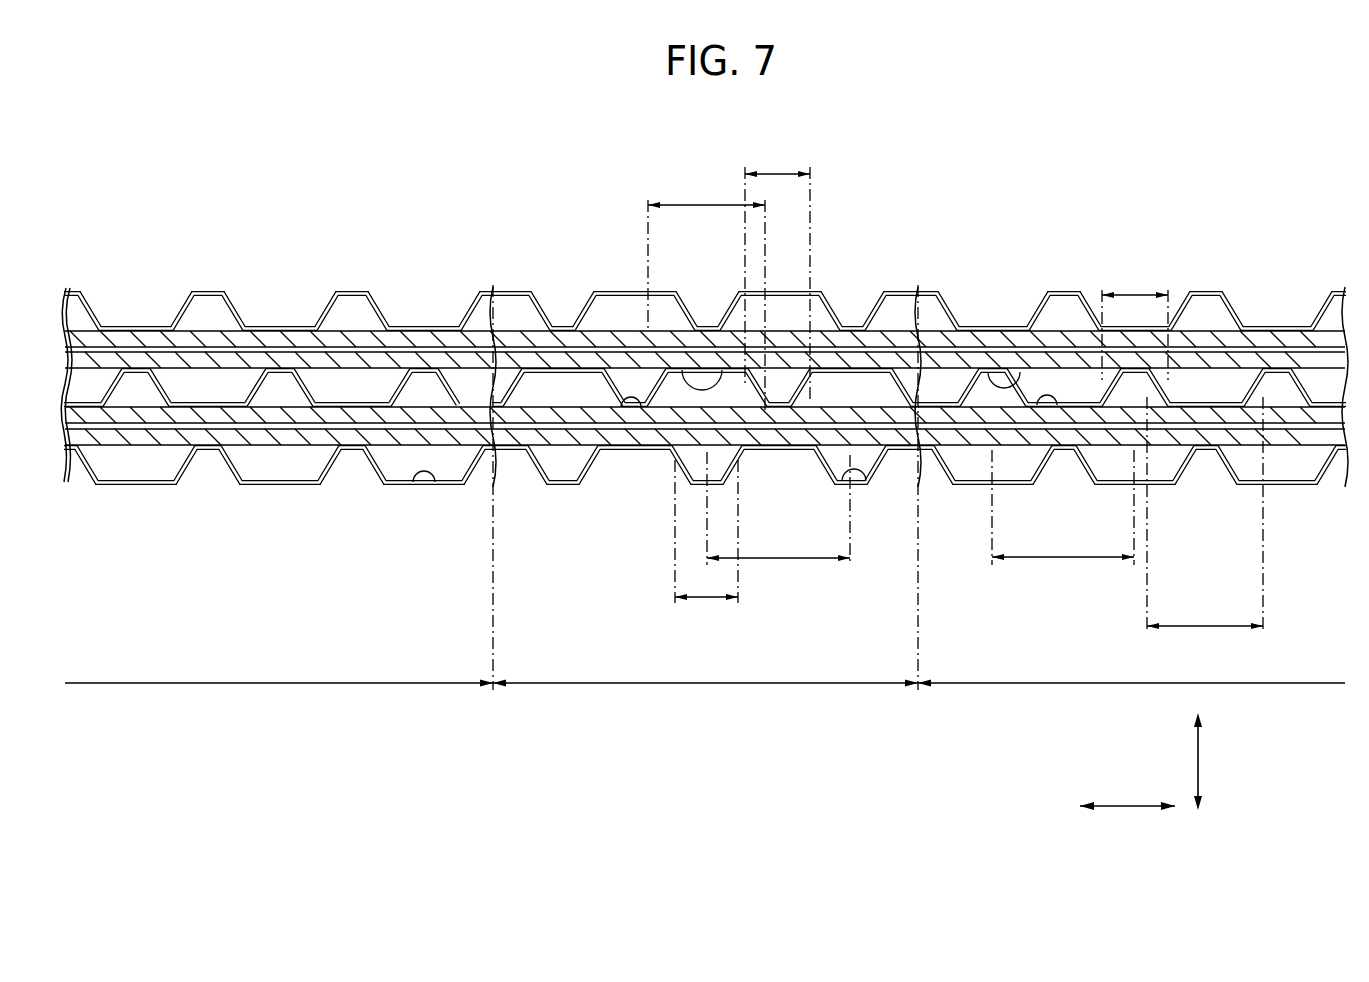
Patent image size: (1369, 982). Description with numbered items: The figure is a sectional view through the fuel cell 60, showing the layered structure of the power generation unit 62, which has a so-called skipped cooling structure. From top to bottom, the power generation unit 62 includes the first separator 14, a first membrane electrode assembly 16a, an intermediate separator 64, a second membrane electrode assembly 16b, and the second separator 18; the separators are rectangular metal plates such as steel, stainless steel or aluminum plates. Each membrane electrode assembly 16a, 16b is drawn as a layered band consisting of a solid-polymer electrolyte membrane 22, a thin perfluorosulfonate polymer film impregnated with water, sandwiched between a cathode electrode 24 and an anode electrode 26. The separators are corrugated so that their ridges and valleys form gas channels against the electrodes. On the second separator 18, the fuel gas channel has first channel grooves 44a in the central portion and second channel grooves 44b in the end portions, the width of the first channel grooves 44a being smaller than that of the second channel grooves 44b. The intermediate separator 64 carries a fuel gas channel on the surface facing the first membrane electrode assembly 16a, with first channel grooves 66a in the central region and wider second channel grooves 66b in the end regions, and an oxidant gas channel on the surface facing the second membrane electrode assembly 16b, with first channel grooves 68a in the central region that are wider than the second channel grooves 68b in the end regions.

The fuel cell 60 is at (737, 122).
The power generation unit 62 is at (341, 600).
The first separator 14 is at (705, 449).
The first membrane electrode assembly 16a is at (705, 467).
The intermediate separator 64 is at (705, 487).
The second membrane electrode assembly 16b is at (705, 505).
The second separator 18 is at (705, 526).
The solid-polymer electrolyte membrane 22 is at (206, 430).
The cathode electrode 24 is at (248, 418).
The anode electrode 26 is at (162, 437).
The first channel grooves 44a is at (857, 487).
The second channel grooves 44b is at (423, 485).
The first channel grooves 66a is at (631, 415).
The second channel grooves 66b is at (1053, 410).
The first channel grooves 68a is at (722, 370).
The second channel grooves 68b is at (1020, 372).